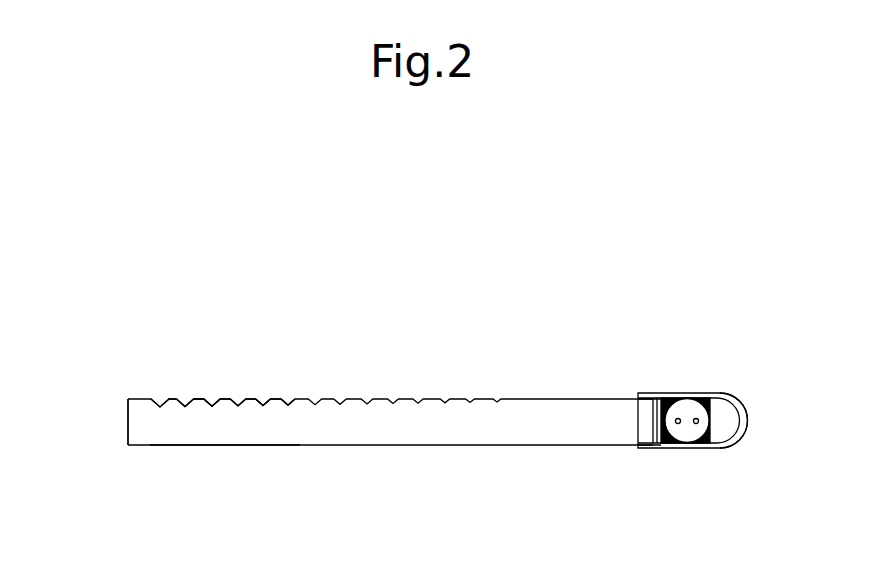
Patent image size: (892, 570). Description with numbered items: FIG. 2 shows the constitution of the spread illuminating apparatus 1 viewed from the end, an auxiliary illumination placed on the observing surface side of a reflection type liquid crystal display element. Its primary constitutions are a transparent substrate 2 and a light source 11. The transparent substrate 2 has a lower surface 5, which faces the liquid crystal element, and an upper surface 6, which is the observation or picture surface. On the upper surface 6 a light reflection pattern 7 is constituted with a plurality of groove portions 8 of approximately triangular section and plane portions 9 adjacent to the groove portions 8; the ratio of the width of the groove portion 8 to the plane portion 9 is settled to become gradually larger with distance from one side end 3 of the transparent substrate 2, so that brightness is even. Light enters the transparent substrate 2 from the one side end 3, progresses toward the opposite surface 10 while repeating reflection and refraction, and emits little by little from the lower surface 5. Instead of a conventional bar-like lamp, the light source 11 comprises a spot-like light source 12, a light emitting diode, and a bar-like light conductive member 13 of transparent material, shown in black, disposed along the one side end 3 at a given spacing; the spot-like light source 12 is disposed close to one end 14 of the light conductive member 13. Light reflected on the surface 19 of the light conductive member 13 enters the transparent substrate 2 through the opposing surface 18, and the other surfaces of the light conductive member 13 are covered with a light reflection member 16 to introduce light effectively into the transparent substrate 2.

The spread illuminating apparatus 1 is at (487, 350).
The transparent substrate 2 is at (293, 430).
The one side end of the transparent substrate 3 is at (649, 413).
The lower surface 5 is at (206, 446).
The upper surface 6 is at (436, 398).
The light reflection pattern 7 is at (285, 289).
The groove portion 8 is at (263, 398).
The plane portion 9 is at (200, 398).
The opposite surface 10 is at (127, 418).
The light source 11 is at (637, 489).
The spot-like light source 12 is at (682, 433).
The light conductive member 13 is at (710, 432).
The one end of the light conductive member 14 is at (669, 398).
The light reflection member 16 is at (740, 437).
The surface opposing the one end side of the transparent substrate 18 is at (650, 421).
The surface opposite to surface 18 19 is at (733, 398).